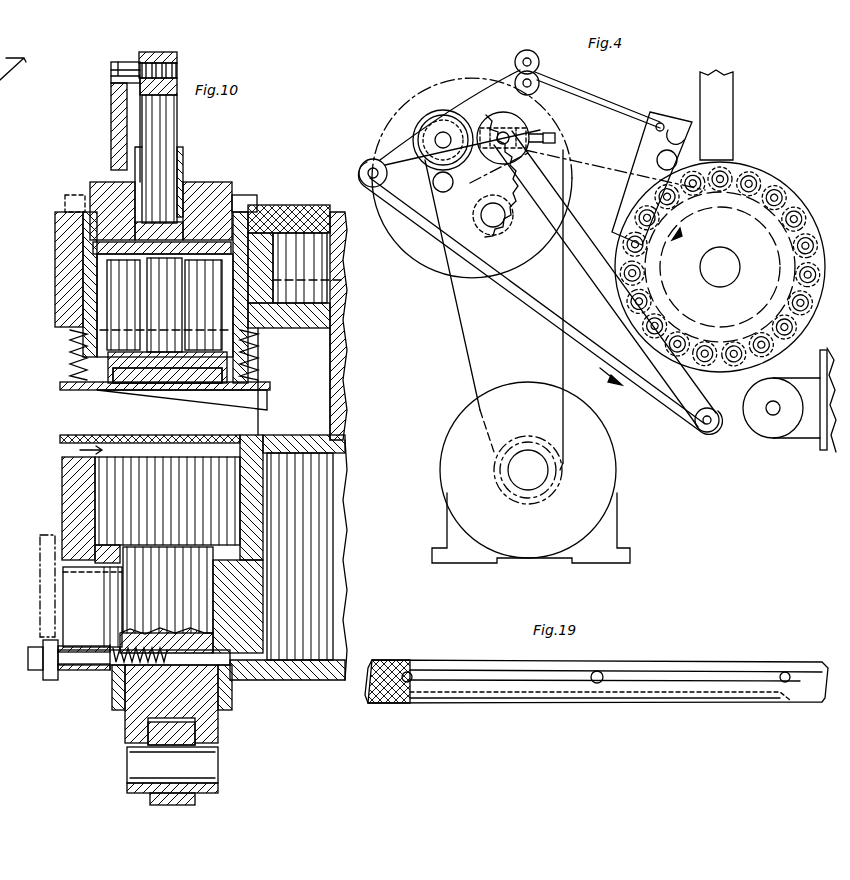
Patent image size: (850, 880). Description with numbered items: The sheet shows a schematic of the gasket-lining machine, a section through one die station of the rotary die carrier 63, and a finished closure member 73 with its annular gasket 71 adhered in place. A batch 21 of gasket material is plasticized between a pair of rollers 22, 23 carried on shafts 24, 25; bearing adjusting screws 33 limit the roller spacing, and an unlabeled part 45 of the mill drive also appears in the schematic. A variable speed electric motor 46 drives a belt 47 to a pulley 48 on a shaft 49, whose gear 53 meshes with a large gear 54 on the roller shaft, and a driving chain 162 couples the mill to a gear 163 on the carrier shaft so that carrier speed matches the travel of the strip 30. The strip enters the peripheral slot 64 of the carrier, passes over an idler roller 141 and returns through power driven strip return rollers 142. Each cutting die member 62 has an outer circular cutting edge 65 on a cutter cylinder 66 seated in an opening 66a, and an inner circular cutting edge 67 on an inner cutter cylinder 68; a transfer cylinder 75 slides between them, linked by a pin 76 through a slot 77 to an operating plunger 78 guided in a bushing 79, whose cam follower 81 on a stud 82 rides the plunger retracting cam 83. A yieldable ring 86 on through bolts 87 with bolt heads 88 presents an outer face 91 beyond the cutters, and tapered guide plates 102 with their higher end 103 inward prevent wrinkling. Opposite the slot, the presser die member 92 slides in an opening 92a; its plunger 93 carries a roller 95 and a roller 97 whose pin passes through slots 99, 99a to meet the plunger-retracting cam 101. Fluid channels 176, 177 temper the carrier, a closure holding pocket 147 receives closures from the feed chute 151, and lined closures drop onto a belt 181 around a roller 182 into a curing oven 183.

In FIG. 10, the cam follower 81 is at (111, 63).
In FIG. 10, the stud 82 is at (178, 66).
In FIG. 10, the plunger retracting cam 83 is at (111, 132).
In FIG. 10, the operating plunger 78 is at (168, 123).
In FIG. 10, the bushing 79 is at (184, 163).
In FIG. 10, the bolt heads 88 is at (66, 196).
In FIG. 10, the opening 66a is at (275, 213).
In FIG. 10, the cutter cylinder 66 is at (70, 260).
In FIG. 10, the inner cutter cylinder 68 is at (0, 274).
In FIG. 10, the transfer cylinder 75 is at (112, 290).
In FIG. 10, the slot 77 is at (135, 300).
In FIG. 10, the pin 76 is at (165, 304).
In FIG. 10, the die member 62 is at (60, 350).
In FIG. 10, the yieldable ring 86 is at (310, 381).
In FIG. 10, the outer circular cutting edge 65 is at (72, 376).
In FIG. 10, the outer face 91 is at (66, 392).
In FIG. 10, the tapered guide plates 102 is at (268, 400).
In FIG. 10, the inner circular cutting edge 67 is at (112, 392).
In FIG. 10, the higher end 103 is at (260, 410).
In FIG. 10, the fluid channel 176 is at (330, 258).
In FIG. 10, the through bolts 87 is at (333, 284).
In FIG. 10, the peripheral slot 64 is at (346, 372).
In FIG. 10, the closure holding pocket 147 is at (0, 445).
In FIG. 10, the opening 92a is at (0, 464).
In FIG. 10, the presser die member 92 is at (0, 494).
In FIG. 10, the rotary die carrier 63 is at (340, 478).
In FIG. 4, the rotary die carrier 63 is at (766, 178).
In FIG. 10, the fluid channel 177 is at (336, 534).
In FIG. 10, the plunger-retracting cam 101 is at (72, 583).
In FIG. 10, the roller 97 is at (48, 678).
In FIG. 10, the slot 99a is at (78, 668).
In FIG. 10, the slot 99 is at (112, 670).
In FIG. 10, the plunger 93 is at (216, 720).
In FIG. 10, the roller 95 is at (197, 800).
In FIG. 4, the pulley 48 is at (472, 282).
In FIG. 4, the batch 21 is at (470, 112).
In FIG. 4, the roller 22 is at (430, 118).
In FIG. 4, the shaft 25 is at (436, 140).
In FIG. 4, the roller 23 is at (508, 122).
In FIG. 4, the shaft 24 is at (530, 128).
In FIG. 4, the bearing adjusting screws 33 is at (552, 132).
In FIG. 4, the large gear 54 is at (500, 184).
In FIG. 4, the roller 45 is at (442, 193).
In FIG. 4, the shaft 49 is at (495, 227).
In FIG. 4, the gear 53 is at (478, 220).
In FIG. 4, the strip return rollers 142 is at (540, 66).
In FIG. 4, the idler roller 141 is at (655, 127).
In FIG. 4, the strip 30 is at (660, 400).
In FIG. 4, the driving chain 162 is at (612, 284).
In FIG. 4, the driving belt 47 is at (462, 366).
In FIG. 4, the variable speed electric motor 46 is at (598, 476).
In FIG. 4, the gear 163 is at (666, 295).
In FIG. 4, the feed chute 151 is at (722, 101).
In FIG. 4, the roller 182 is at (768, 430).
In FIG. 4, the belt 181 is at (818, 372).
In FIG. 4, the curing oven 183 is at (818, 455).
In FIG. 19, the annular gasket 71 is at (392, 662).
In FIG. 19, the closure member 73 is at (508, 702).